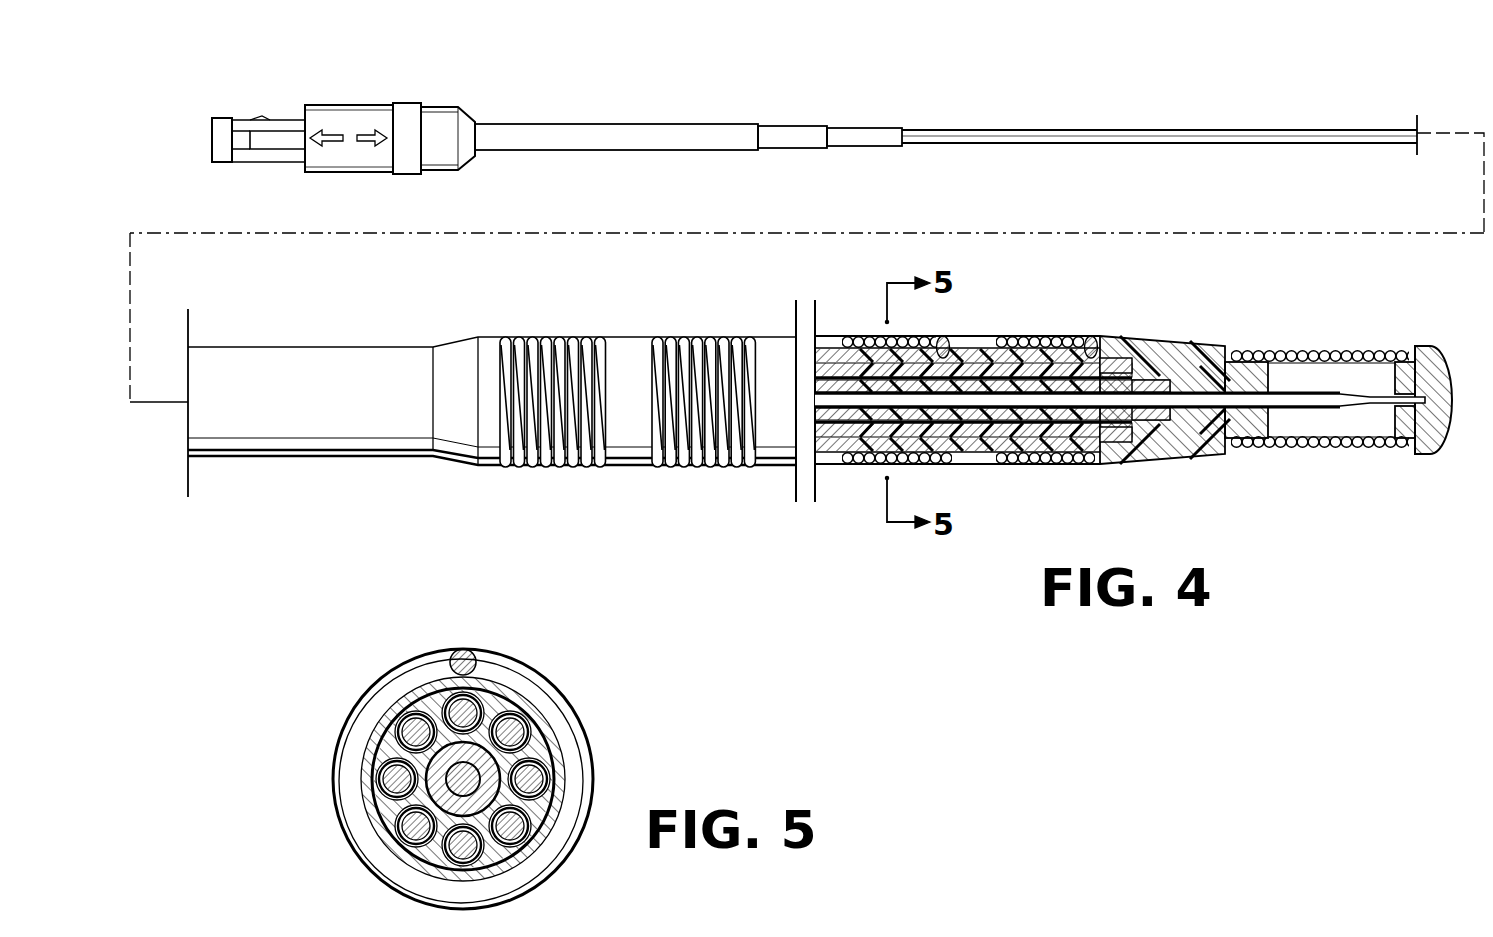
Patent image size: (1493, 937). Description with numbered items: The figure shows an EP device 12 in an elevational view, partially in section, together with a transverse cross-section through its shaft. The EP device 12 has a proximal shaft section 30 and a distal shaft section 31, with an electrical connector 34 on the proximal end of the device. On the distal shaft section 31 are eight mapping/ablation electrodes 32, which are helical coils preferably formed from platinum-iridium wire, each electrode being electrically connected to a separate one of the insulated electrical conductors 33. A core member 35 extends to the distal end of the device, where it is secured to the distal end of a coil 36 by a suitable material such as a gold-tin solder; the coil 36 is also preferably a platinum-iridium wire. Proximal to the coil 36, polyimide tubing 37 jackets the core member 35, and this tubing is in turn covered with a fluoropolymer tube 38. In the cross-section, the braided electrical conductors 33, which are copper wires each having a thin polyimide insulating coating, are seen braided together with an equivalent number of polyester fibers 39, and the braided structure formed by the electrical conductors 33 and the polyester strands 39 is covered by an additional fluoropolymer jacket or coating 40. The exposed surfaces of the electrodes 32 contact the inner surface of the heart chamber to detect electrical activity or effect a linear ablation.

In FIG. 4, the EP device 12 is at (814, 118).
In FIG. 4, the proximal shaft section 30 is at (1148, 137).
In FIG. 4, the distal shaft section 31 is at (633, 348).
In FIG. 4, the mapping/ablation electrodes 32 is at (548, 457).
In FIG. 5, the mapping/ablation electrodes 32 is at (350, 795).
In FIG. 4, the electrical conductors 33 is at (958, 360).
In FIG. 5, the electrical conductors 33 is at (418, 828).
In FIG. 4, the electrical connector 34 is at (332, 105).
In FIG. 4, the core member 35 is at (1155, 395).
In FIG. 5, the core member 35 is at (530, 843).
In FIG. 4, the coil 36 is at (1347, 447).
In FIG. 4, the polyimide tubing 37 is at (1137, 410).
In FIG. 5, the polyimide tubing 37 is at (425, 744).
In FIG. 4, the fluoropolymer tube 38 is at (1197, 412).
In FIG. 5, the fluoropolymer tube 38 is at (497, 758).
In FIG. 5, the polyester fibers 39 is at (387, 780).
In FIG. 5, the fluoropolymer jacket 40 is at (413, 690).